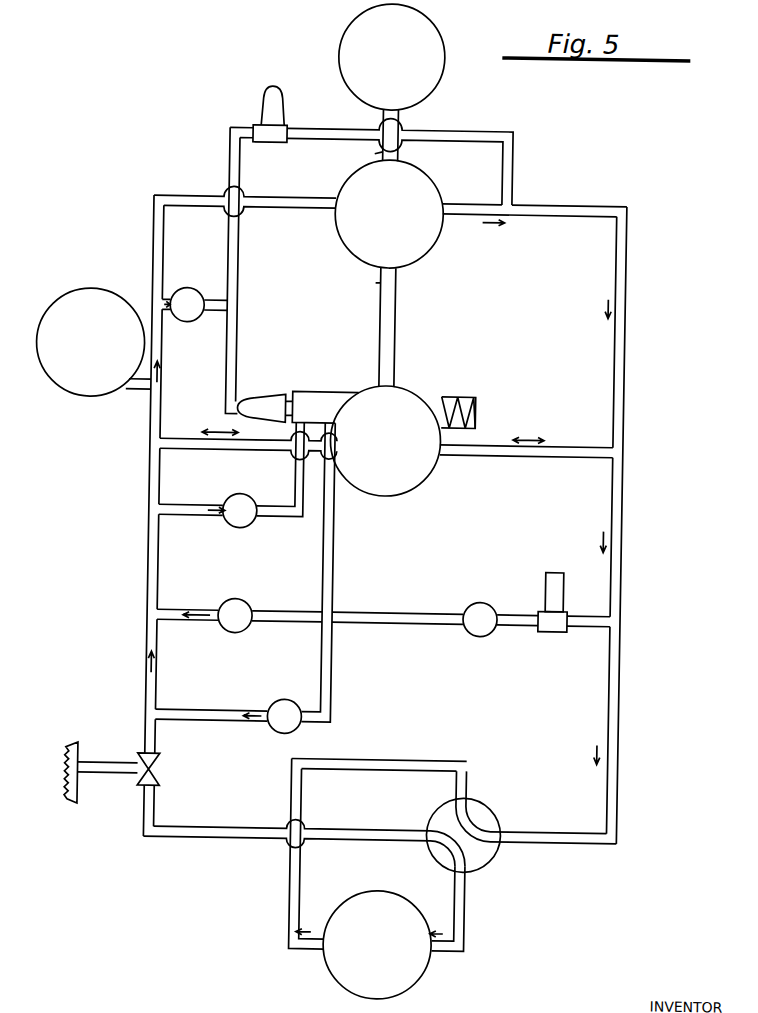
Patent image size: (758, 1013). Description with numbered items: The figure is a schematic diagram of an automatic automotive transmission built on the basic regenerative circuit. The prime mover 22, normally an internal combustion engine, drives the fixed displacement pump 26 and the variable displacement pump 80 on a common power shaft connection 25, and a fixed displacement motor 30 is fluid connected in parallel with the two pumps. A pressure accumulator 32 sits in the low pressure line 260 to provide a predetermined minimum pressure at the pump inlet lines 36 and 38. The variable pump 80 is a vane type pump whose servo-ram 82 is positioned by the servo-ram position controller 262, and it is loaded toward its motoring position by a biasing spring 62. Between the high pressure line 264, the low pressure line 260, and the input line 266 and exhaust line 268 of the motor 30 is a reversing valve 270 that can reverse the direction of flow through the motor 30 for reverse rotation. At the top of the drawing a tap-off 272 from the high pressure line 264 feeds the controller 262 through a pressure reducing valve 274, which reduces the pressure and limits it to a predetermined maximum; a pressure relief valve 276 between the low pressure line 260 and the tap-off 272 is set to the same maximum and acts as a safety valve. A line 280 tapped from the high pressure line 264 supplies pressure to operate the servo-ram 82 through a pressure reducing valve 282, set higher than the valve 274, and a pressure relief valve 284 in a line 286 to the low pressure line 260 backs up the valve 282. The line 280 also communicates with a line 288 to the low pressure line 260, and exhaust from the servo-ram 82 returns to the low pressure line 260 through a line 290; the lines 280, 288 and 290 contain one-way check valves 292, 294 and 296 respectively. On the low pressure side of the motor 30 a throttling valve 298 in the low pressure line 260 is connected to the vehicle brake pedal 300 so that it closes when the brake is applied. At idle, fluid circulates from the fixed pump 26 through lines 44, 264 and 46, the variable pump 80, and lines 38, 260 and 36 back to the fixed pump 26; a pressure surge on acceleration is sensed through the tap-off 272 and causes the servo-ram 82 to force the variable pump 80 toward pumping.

The prime mover 22 is at (429, 88).
The common power shaft connection 25 is at (395, 148).
The fixed displacement pump 26 is at (429, 246).
The tap-off line 272 is at (481, 131).
The pressure reducing valve 274 is at (279, 110).
The pump inlet line 36 is at (272, 210).
The line 44 is at (541, 214).
The pressure accumulator 32 is at (79, 295).
The low pressure line 260 is at (129, 511).
The pressure relief valve 276 is at (187, 291).
The servo-ram position controller 262 is at (260, 401).
The servo-ram 82 is at (323, 389).
The biasing spring 62 is at (460, 396).
The variable displacement pump 80 is at (423, 480).
The line 46 is at (528, 455).
The pump inlet line 38 is at (229, 453).
The one-way check valve 296 is at (233, 529).
The line 290 is at (273, 519).
The one-way check valve 294 is at (227, 605).
The line 288 is at (272, 612).
The line 280 is at (335, 528).
The one-way check valve 292 is at (480, 635).
The pressure reducing valve 282 is at (547, 589).
The pressure relief valve 284 is at (293, 702).
The line 286 is at (202, 712).
The high pressure line 264 is at (623, 501).
The throttling valve 298 is at (165, 773).
The vehicle brake pedal 300 is at (68, 805).
The reversing valve 270 is at (495, 808).
The input line 266 is at (455, 951).
The exhaust line 268 is at (305, 951).
The fixed displacement motor 30 is at (429, 976).